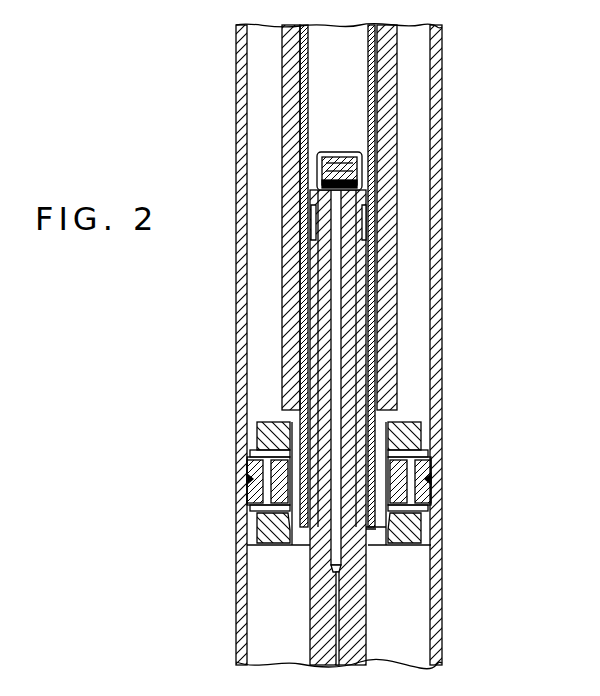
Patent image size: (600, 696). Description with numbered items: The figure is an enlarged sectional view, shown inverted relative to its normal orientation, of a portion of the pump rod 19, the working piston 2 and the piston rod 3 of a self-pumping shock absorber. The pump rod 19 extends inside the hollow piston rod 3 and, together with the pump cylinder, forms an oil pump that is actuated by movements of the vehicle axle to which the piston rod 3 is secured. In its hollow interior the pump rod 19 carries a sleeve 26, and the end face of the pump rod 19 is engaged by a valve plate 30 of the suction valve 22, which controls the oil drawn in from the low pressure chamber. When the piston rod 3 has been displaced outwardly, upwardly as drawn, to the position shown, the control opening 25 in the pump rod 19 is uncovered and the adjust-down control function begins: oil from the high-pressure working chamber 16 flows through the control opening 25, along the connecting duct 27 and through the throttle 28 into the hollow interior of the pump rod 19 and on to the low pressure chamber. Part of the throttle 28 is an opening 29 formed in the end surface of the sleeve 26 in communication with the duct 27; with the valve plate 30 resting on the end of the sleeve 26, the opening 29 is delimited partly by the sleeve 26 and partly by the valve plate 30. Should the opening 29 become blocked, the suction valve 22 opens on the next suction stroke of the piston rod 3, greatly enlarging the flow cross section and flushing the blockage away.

The working piston 2 is at (410, 466).
The piston rod 3 is at (386, 316).
The working chamber 16 is at (400, 617).
The pump rod 19 is at (353, 652).
The suction valve 22 is at (368, 170).
The control opening 25 is at (368, 528).
The sleeve 26 is at (362, 262).
The connecting duct 27 is at (356, 352).
The throttle 28 is at (365, 178).
The opening 29 is at (360, 193).
The valve plate 30 is at (363, 158).